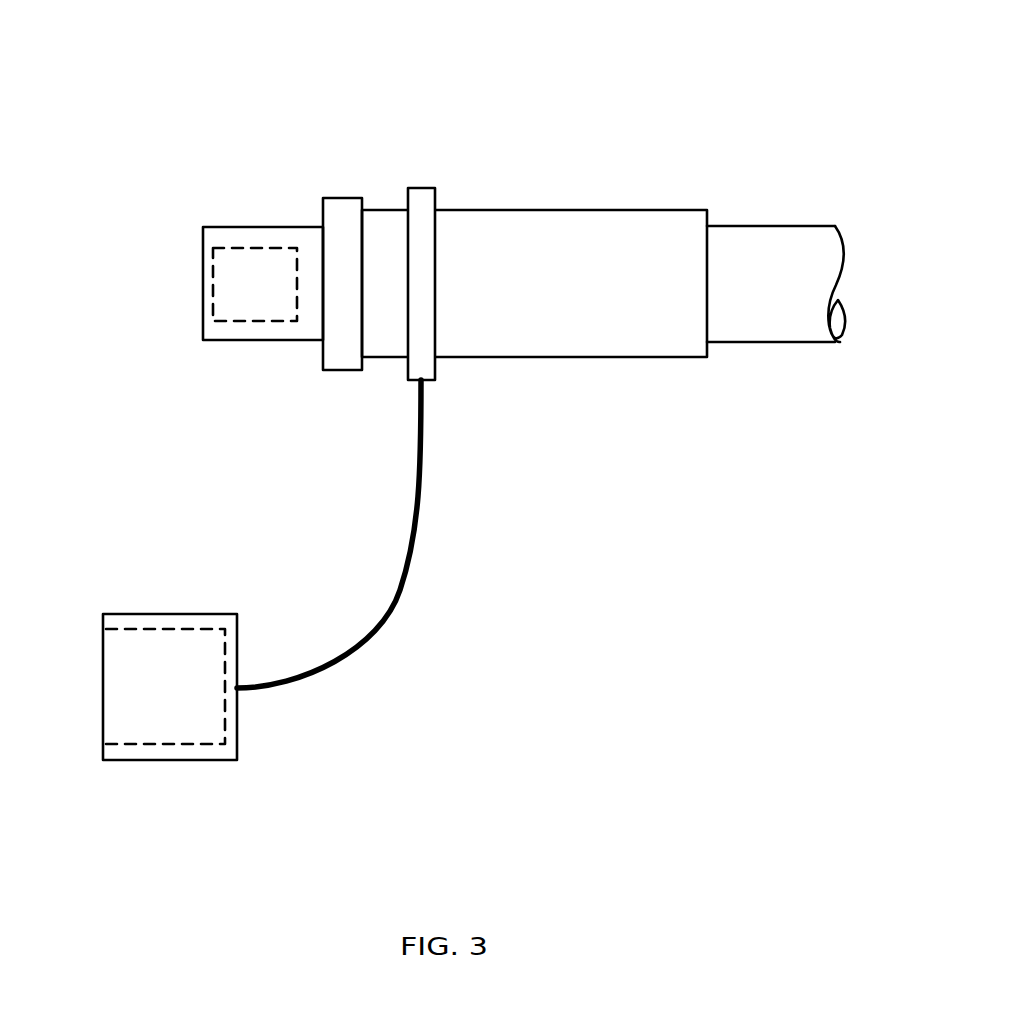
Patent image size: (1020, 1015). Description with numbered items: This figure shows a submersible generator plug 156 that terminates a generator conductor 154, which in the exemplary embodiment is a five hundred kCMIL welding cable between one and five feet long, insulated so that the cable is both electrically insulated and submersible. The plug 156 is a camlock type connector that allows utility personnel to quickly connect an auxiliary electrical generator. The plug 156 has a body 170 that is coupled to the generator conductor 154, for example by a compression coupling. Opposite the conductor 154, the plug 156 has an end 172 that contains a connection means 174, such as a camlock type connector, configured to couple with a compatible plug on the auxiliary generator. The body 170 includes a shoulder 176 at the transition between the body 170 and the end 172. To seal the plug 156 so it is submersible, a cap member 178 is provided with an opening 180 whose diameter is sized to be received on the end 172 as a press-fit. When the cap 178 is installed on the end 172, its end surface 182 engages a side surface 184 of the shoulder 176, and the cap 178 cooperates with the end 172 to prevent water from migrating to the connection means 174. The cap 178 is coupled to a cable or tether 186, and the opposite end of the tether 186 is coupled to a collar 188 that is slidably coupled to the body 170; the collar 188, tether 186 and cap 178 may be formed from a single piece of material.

The generator conductor 154 is at (767, 226).
The generator plug 156 is at (303, 74).
The body 170 is at (585, 210).
The end 172 is at (228, 227).
The connection means 174 is at (259, 330).
The shoulder 176 is at (350, 198).
The cap member 178 is at (190, 614).
The opening 180 is at (165, 762).
The end surface 182 is at (103, 755).
The side surface 184 is at (322, 362).
The tether 186 is at (418, 543).
The collar 188 is at (422, 188).